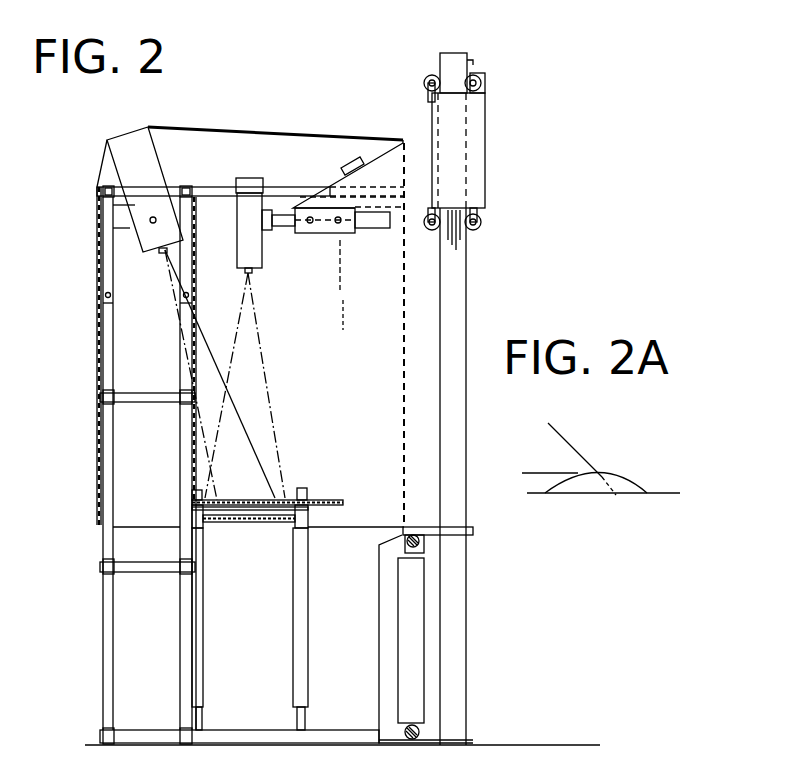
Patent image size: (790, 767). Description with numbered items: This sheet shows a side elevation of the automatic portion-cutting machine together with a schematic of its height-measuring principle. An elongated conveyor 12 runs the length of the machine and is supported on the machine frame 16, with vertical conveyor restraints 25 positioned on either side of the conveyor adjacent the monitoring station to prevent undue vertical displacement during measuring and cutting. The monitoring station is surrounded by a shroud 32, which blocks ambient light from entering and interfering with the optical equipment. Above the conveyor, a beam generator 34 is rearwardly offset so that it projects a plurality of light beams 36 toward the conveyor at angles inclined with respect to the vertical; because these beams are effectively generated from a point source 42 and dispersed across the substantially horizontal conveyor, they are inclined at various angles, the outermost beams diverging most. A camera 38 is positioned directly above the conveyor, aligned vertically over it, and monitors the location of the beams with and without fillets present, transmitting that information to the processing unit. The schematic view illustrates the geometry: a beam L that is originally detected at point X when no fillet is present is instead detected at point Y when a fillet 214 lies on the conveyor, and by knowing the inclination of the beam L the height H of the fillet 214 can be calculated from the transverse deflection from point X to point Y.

In FIG. 2, the conveyor 12 is at (266, 497).
In FIG. 2, the machine frame 16 is at (100, 470).
In FIG. 2, the vertical conveyor restraints 25 is at (193, 495).
In FIG. 2, the shroud 32 is at (334, 423).
In FIG. 2, the beam generator 34 is at (152, 148).
In FIG. 2, the light beams 36 is at (196, 393).
In FIG. 2, the camera 38 is at (257, 253).
In FIG. 2, the point source 42 is at (165, 253).
In FIG. 2A, the fillet 214 is at (628, 483).
In FIG. 2A, the beam L is at (565, 438).
In FIG. 2A, the height H is at (542, 515).
In FIG. 2A, the point X is at (613, 495).
In FIG. 2A, the point Y is at (590, 495).